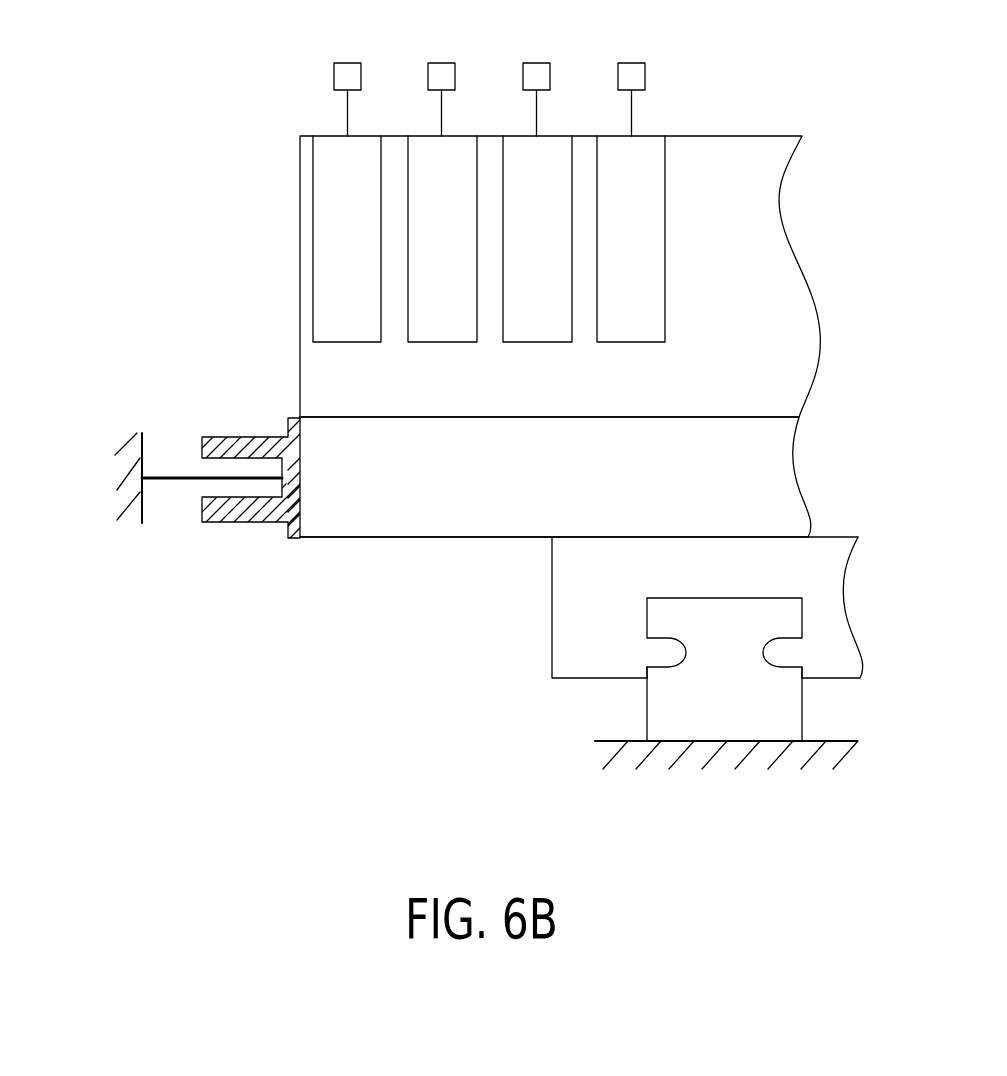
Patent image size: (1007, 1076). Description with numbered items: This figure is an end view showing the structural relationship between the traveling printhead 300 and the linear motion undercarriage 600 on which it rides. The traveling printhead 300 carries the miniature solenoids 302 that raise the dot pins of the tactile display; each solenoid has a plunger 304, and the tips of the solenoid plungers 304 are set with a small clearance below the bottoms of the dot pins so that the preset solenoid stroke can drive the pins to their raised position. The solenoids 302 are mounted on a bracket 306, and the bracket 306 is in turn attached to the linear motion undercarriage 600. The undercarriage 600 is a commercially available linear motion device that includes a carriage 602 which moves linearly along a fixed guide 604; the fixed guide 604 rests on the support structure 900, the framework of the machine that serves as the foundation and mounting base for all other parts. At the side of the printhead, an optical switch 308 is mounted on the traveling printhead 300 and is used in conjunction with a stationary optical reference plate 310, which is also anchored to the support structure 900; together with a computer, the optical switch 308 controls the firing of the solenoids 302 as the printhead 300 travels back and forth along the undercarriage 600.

The traveling printhead 300 is at (759, 94).
The miniature solenoids 302 is at (440, 308).
The solenoid plungers 304 is at (642, 63).
The bracket 306 is at (768, 330).
The optical switch 308 is at (268, 435).
The optical reference plate 310 is at (172, 448).
The support structure 900 is at (120, 463).
The linear motion undercarriage 600 is at (535, 639).
The carriage 602 is at (547, 585).
The fixed guide 604 is at (676, 695).